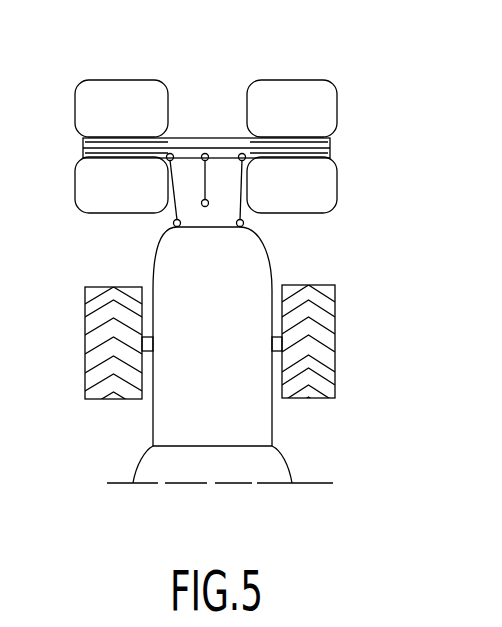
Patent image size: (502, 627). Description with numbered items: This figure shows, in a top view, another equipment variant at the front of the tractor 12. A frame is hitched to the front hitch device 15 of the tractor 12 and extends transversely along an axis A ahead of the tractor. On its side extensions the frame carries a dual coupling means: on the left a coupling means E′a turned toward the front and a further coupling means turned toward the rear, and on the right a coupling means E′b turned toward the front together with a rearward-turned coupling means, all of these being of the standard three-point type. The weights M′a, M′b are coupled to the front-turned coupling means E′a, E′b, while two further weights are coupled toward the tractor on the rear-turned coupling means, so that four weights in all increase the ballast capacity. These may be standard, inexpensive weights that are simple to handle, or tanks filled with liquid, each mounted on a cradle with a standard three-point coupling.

The weight M′a is at (141, 97).
The weight M′b is at (310, 95).
The axis A is at (235, 129).
The coupling means E′a is at (78, 137).
The coupling means E′b is at (335, 137).
The front hitch device 15 is at (250, 216).
The tractor 12 is at (284, 422).